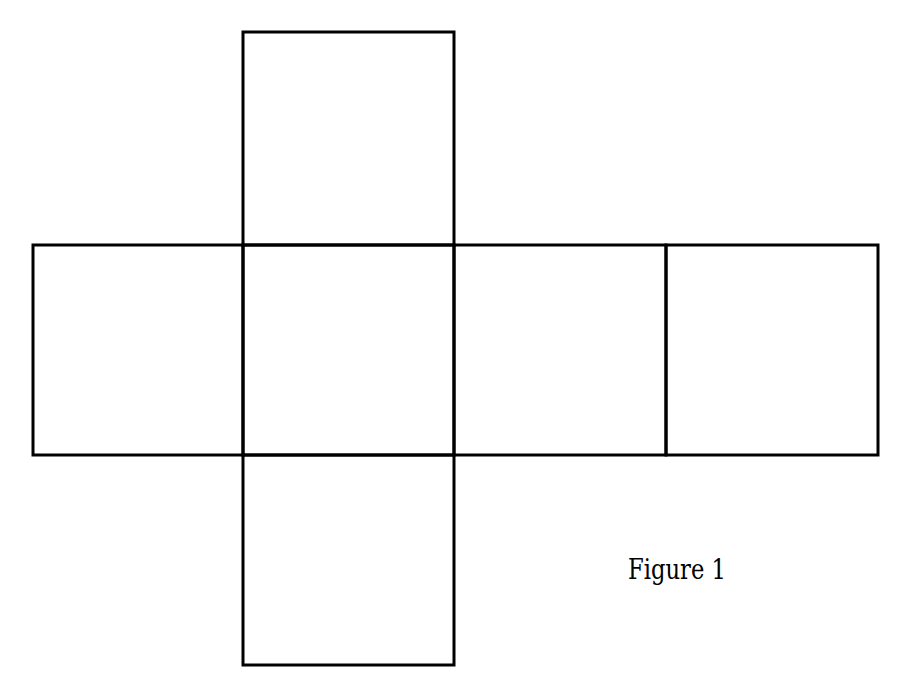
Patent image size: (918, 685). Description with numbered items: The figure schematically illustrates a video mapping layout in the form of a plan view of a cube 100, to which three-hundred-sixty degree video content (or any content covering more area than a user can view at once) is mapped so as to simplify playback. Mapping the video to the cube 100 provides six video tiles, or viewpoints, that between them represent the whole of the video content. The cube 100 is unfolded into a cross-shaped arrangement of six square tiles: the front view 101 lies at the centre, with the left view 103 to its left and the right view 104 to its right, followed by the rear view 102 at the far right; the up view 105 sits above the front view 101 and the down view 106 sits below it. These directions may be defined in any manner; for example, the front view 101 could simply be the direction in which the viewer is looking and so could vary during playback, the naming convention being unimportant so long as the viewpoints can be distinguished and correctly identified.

The cube 100 is at (690, 96).
The front view 101 is at (348, 350).
The rear view 102 is at (772, 350).
The left view 103 is at (138, 350).
The right view 104 is at (560, 350).
The up view 105 is at (348, 138).
The down view 106 is at (348, 560).